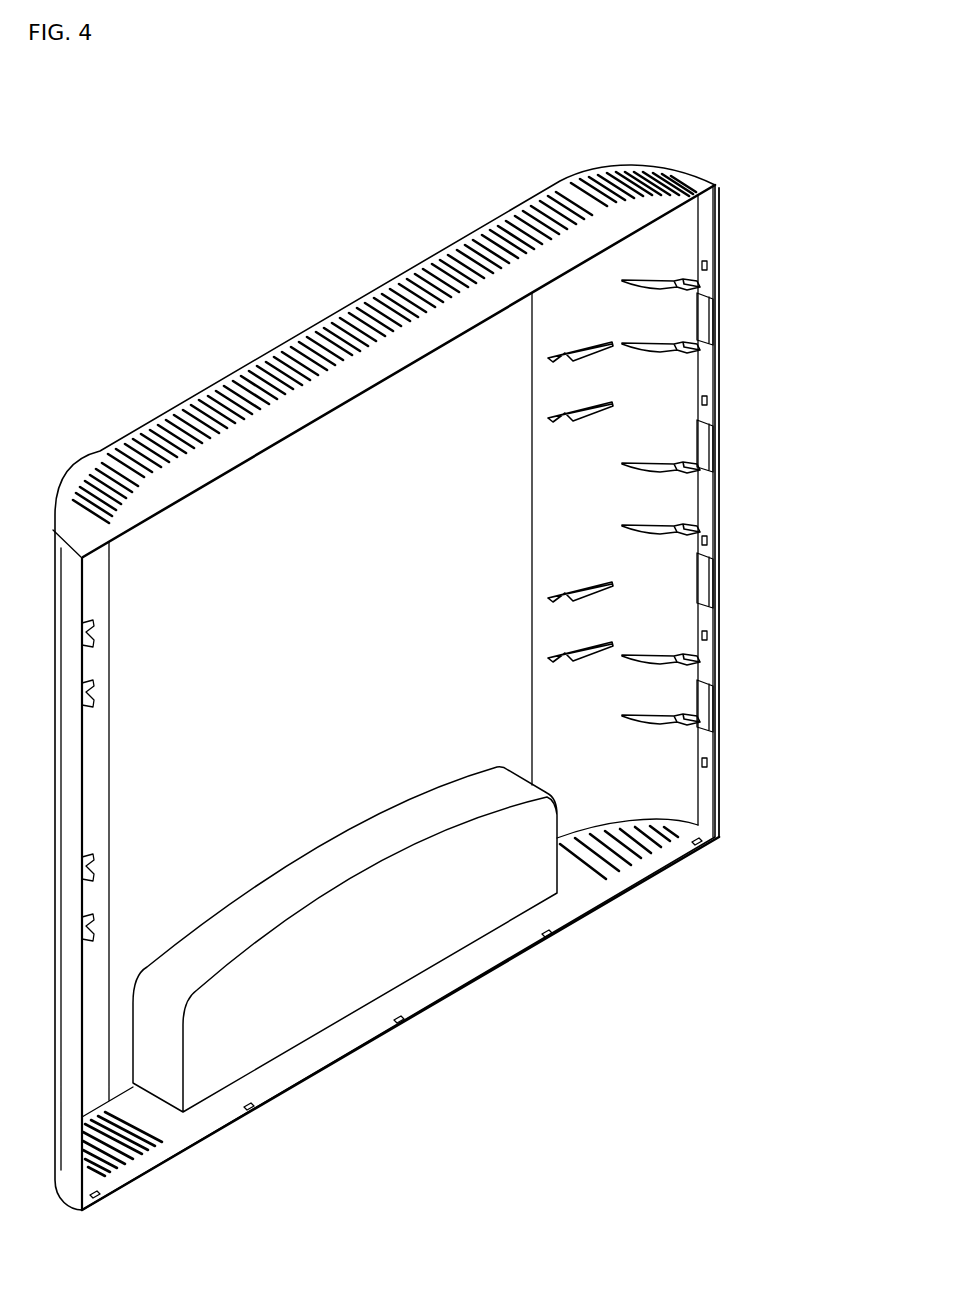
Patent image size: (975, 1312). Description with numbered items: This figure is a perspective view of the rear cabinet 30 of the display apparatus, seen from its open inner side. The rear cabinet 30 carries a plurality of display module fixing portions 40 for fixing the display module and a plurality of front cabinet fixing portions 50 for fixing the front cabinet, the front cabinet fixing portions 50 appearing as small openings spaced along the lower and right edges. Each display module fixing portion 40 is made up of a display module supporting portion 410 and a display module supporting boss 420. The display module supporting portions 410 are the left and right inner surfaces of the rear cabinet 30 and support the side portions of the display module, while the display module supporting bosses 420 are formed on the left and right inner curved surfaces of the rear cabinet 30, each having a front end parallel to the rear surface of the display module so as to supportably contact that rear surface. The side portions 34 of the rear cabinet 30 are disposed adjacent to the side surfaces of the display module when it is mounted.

The rear cabinet 30 is at (438, 649).
The side portion of the rear cabinet 34 is at (712, 226).
The display module fixing portion 40 is at (686, 410).
The display module supporting portion 410 is at (697, 298).
The display module supporting boss 420 is at (662, 280).
The front cabinet fixing portion 50 is at (711, 268).